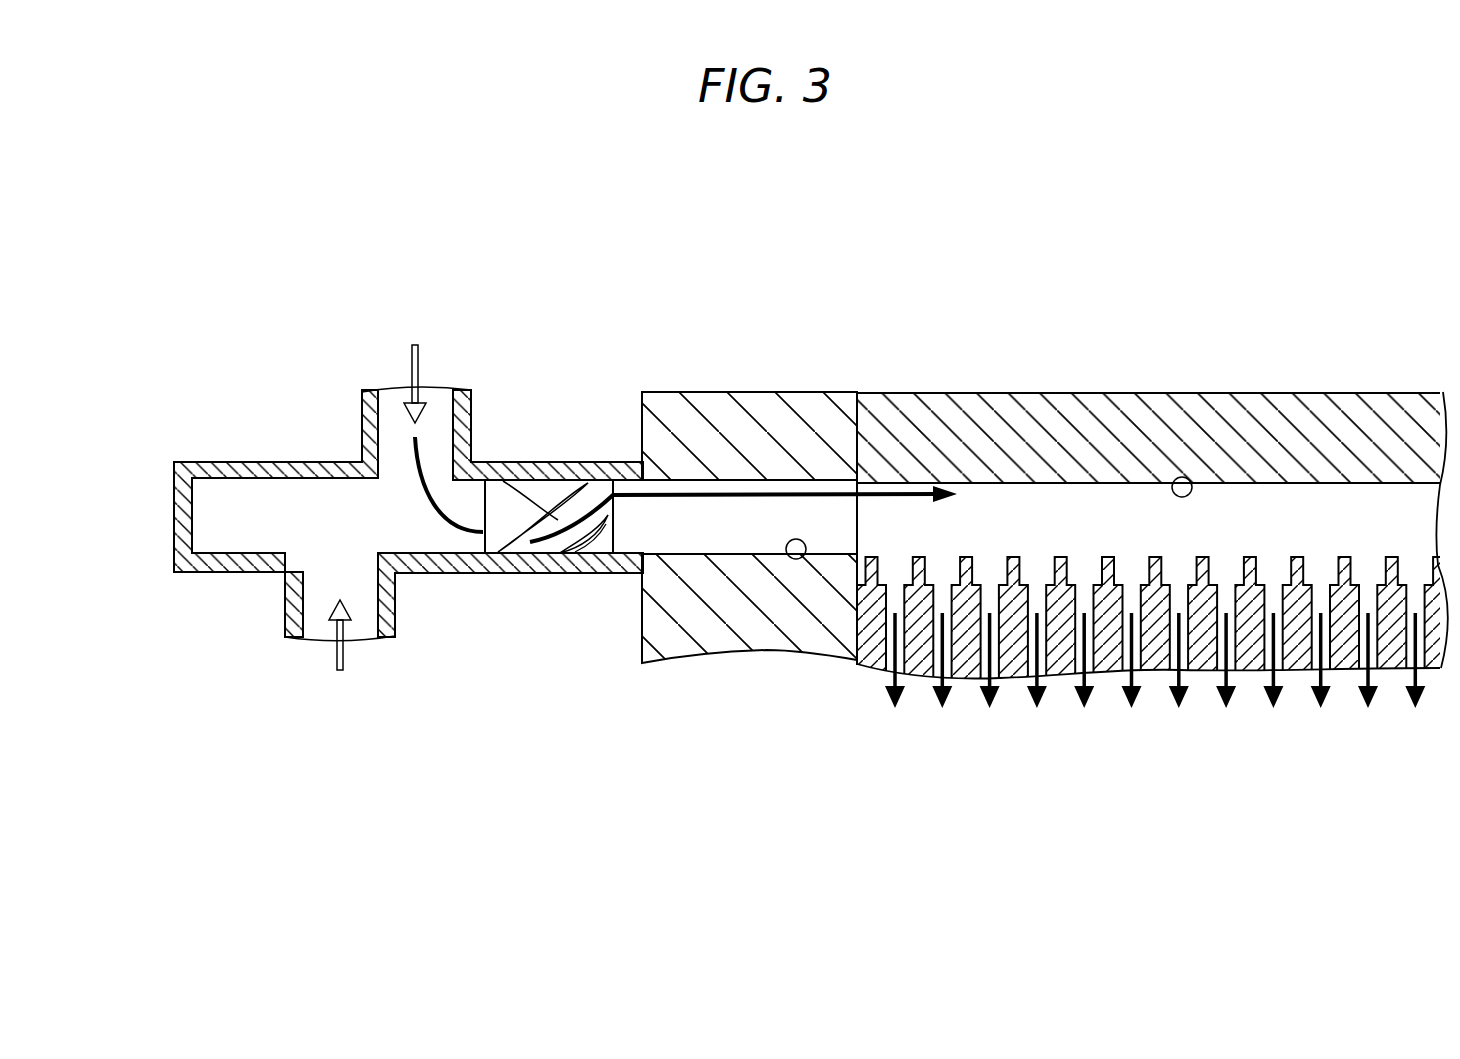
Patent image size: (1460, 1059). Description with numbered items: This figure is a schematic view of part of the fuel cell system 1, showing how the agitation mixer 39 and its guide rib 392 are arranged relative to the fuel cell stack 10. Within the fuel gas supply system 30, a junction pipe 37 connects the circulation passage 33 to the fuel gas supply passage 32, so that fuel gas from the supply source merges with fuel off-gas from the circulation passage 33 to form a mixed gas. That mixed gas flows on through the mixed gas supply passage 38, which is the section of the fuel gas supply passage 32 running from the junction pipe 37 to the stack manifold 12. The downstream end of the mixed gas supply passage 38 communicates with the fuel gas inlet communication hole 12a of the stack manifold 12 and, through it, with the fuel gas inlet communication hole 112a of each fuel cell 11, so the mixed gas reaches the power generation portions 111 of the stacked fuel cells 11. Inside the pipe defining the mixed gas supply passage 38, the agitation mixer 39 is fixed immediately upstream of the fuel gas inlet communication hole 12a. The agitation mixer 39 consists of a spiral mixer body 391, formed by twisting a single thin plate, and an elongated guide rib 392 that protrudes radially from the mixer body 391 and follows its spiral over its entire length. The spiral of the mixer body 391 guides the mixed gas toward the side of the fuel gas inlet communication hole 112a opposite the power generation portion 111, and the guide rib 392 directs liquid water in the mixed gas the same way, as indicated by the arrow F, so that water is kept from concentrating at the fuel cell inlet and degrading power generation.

The fuel cell system 1 is at (460, 236).
The fuel cell stack 10 is at (1153, 539).
The fuel cell 11 is at (1152, 636).
The power generation portion 111 is at (1017, 660).
The fuel gas inlet communication hole 112a is at (1185, 478).
The stack manifold 12 is at (750, 529).
The fuel gas inlet communication hole 12a is at (796, 558).
The fuel gas supply system 30 is at (363, 507).
The fuel gas supply passage 32 is at (285, 602).
The circulation passage 33 is at (471, 430).
The junction pipe 37 is at (265, 468).
The mixed gas supply passage 38 is at (597, 462).
The agitation mixer 39 is at (549, 504).
The mixer body 391 is at (505, 530).
The guide rib 392 is at (558, 542).
The arrow F is at (900, 492).